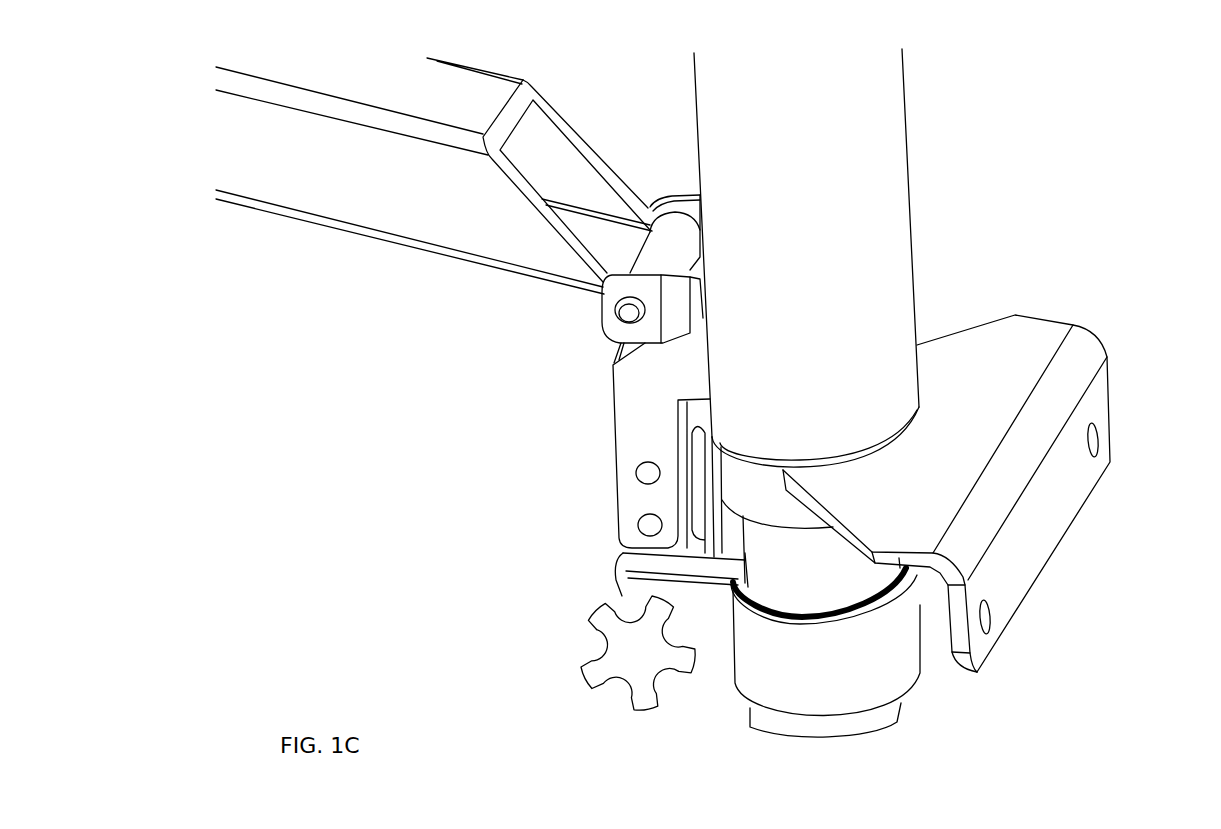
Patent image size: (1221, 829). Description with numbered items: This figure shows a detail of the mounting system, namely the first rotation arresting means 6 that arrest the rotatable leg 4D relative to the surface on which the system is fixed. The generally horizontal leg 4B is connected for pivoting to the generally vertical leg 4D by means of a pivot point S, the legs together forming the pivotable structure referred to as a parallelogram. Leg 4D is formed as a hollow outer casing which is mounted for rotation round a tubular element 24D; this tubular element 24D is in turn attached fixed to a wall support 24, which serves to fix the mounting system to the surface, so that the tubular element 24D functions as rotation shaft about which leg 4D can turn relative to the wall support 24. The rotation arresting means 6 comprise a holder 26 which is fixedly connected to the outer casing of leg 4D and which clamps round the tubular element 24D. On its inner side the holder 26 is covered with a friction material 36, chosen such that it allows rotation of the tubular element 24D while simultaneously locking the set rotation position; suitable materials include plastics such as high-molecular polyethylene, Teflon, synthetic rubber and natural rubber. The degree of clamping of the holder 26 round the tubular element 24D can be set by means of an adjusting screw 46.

The leg 4B is at (283, 216).
The leg 4D is at (906, 84).
The pivot point S is at (614, 313).
The wall support 24 is at (1098, 396).
The tubular element 24D is at (834, 584).
The holder 26 is at (828, 692).
The friction material 36 is at (797, 623).
The rotation arresting means 6 is at (733, 703).
The adjusting screw 46 is at (598, 691).